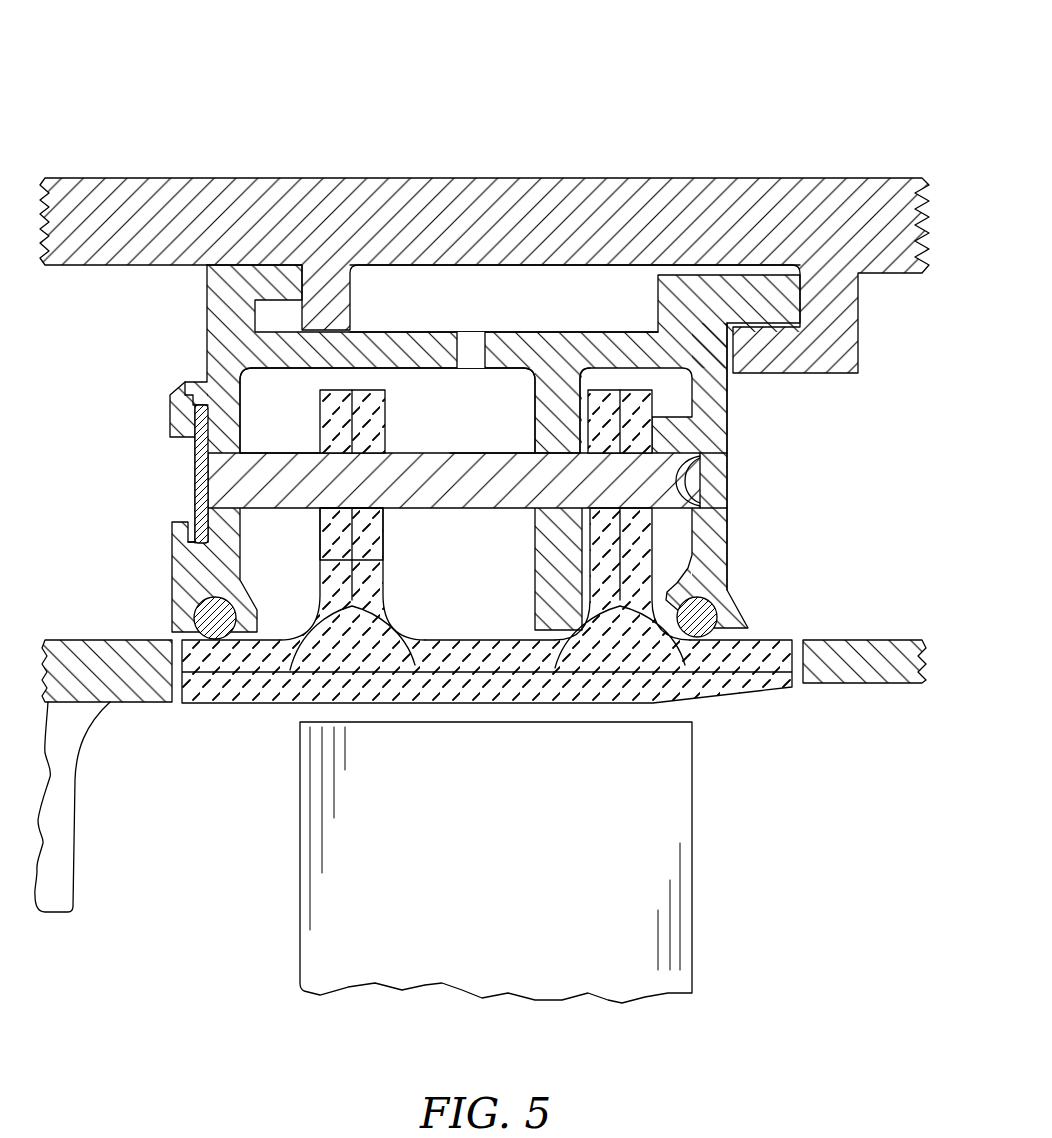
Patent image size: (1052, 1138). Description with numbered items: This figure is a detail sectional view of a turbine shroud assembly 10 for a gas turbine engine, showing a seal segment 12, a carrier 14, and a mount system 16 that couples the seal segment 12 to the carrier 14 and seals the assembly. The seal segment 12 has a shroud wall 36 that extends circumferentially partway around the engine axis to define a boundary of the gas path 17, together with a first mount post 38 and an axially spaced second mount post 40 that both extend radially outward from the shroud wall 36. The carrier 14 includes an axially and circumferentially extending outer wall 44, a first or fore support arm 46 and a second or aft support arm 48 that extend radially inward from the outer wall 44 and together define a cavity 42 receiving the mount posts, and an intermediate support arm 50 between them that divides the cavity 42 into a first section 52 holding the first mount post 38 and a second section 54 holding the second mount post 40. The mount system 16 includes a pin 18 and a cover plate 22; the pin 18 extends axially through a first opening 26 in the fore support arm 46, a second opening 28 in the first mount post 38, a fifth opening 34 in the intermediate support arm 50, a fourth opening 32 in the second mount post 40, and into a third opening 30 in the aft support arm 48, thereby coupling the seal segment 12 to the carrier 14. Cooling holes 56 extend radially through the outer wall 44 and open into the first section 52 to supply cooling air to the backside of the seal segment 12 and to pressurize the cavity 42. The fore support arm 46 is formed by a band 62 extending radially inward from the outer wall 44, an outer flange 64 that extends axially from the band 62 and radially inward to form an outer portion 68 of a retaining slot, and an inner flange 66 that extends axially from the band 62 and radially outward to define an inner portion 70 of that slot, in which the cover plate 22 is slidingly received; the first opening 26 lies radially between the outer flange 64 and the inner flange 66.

The turbine shroud assembly 10 is at (107, 78).
The seal segment 12 is at (270, 763).
The carrier 14 is at (368, 262).
The mount system 16 is at (105, 484).
The gas path 17 is at (185, 874).
The pin 18 is at (270, 449).
The cover plate 22 is at (190, 450).
The first opening 26 is at (246, 480).
The second opening 28 is at (395, 480).
The third opening 30 is at (690, 481).
The fourth opening 32 is at (622, 490).
The fifth opening 34 is at (530, 476).
The shroud wall 36 is at (215, 708).
The first mount post 38 is at (408, 598).
The second mount post 40 is at (585, 590).
The cavity 42 is at (418, 394).
The outer wall 44 is at (435, 280).
The first support arm 46 is at (108, 330).
The second support arm 48 is at (737, 425).
The intermediate support arm 50 is at (525, 404).
The first section 52 is at (455, 444).
The second section 54 is at (690, 404).
The cooling holes 56 is at (471, 326).
The band 62 is at (250, 414).
The outer flange 64 is at (168, 408).
The inner flange 66 is at (168, 528).
The outer portion 68 is at (189, 400).
The inner portion 70 is at (195, 549).